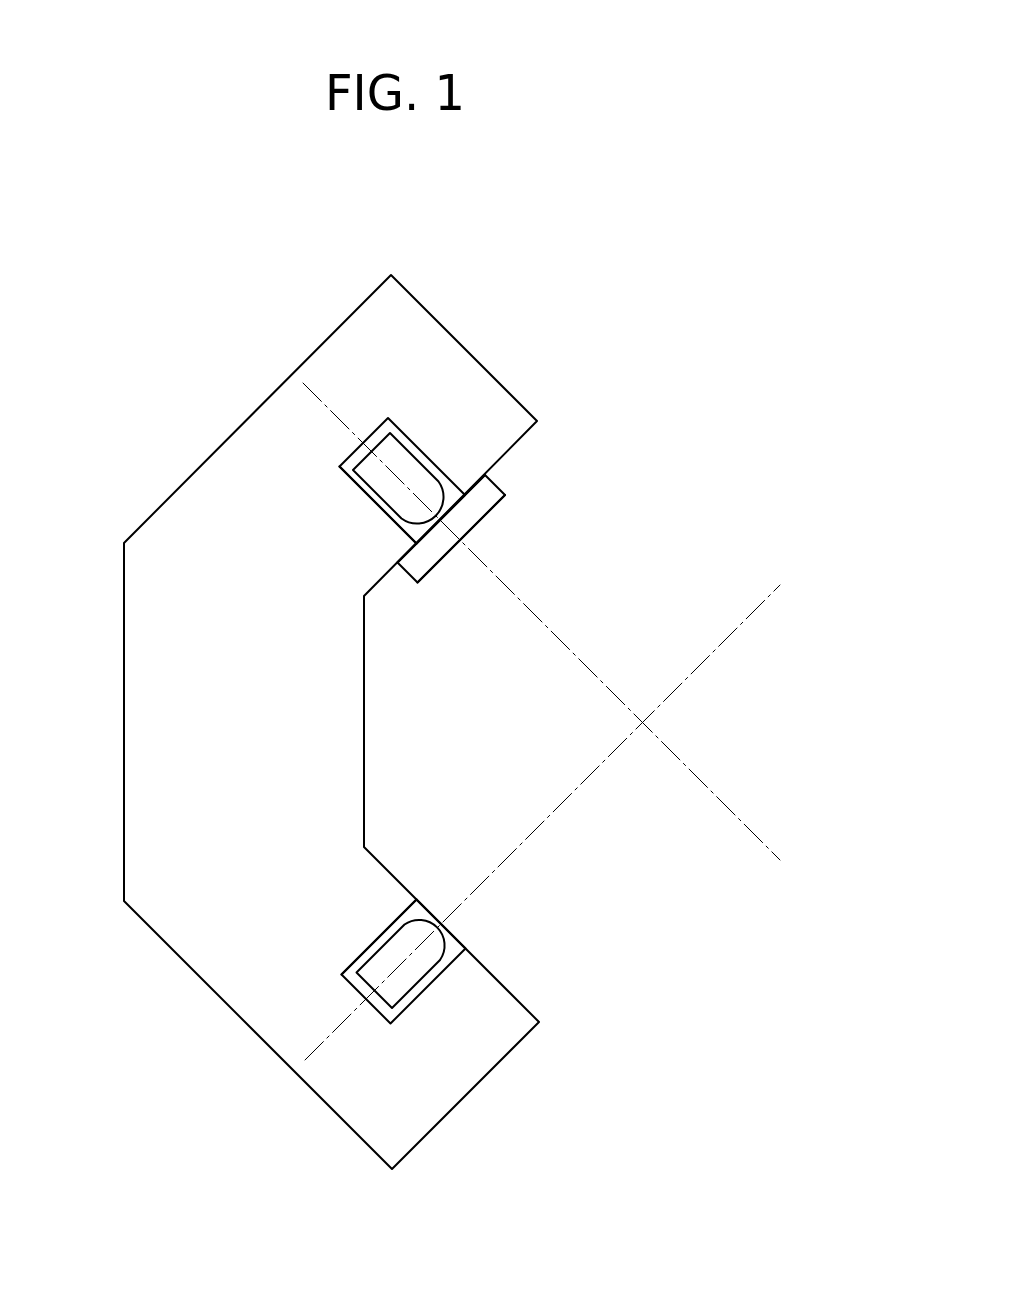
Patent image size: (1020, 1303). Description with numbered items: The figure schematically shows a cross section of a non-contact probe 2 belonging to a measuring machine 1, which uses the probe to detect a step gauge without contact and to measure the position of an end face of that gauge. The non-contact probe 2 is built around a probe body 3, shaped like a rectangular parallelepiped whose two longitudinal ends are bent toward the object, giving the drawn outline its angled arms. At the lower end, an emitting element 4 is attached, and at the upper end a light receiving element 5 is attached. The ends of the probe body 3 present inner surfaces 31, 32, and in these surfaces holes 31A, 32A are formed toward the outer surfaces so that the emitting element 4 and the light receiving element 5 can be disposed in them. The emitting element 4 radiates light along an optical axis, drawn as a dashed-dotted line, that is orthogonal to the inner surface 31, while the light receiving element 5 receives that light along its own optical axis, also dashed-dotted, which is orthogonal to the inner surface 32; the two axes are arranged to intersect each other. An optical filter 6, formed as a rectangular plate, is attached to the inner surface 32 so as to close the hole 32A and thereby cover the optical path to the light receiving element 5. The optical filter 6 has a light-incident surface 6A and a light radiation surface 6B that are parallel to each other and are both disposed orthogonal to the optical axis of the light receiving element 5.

The measuring machine 1 is at (628, 203).
The non-contact probe 2 is at (379, 241).
The probe body 3 is at (127, 736).
The inner surface 31 is at (498, 980).
The hole 31A is at (411, 907).
The inner surface 32 is at (524, 440).
The hole 32A is at (388, 518).
The emitting element 4 is at (441, 939).
The light receiving element 5 is at (402, 461).
The optical filter 6 is at (434, 567).
The light-incident surface 6A is at (488, 516).
The light radiation surface 6B is at (475, 482).